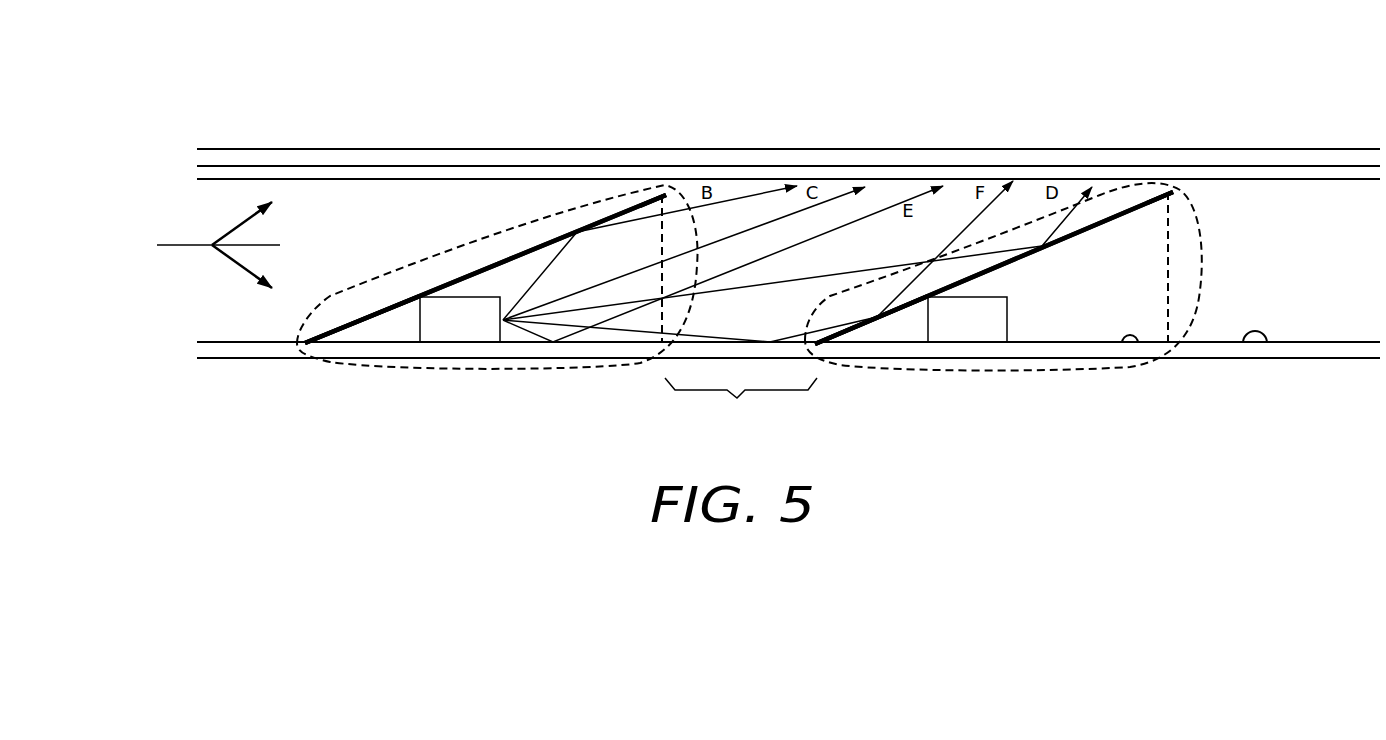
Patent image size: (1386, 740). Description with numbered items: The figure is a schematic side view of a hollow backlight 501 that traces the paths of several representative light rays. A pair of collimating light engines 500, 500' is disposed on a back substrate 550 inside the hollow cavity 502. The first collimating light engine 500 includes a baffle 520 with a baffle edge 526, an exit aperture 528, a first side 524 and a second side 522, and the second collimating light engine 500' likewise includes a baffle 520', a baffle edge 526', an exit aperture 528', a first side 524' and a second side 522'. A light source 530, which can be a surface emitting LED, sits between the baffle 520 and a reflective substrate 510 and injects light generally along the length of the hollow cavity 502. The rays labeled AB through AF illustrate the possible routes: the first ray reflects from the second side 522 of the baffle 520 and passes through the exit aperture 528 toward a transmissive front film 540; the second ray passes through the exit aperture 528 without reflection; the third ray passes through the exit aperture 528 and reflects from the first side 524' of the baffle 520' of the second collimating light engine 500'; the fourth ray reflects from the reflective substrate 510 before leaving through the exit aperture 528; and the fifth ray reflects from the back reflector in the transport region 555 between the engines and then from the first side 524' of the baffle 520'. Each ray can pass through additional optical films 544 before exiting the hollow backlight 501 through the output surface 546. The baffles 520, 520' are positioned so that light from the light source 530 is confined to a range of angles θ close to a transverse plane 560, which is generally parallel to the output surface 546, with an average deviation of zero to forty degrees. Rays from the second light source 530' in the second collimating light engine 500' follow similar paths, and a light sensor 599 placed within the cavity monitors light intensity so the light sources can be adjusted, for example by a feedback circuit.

The hollow backlight 501 is at (187, 80).
The hollow cavity 502 is at (325, 200).
The transmissive front film 540 is at (258, 157).
The additional optical films 544 is at (387, 172).
The output surface 546 is at (446, 148).
The back substrate 550 is at (233, 348).
The transverse plane 560 is at (182, 245).
The first collimating light engine 500 is at (497, 310).
The baffle 520 is at (485, 214).
The first side 524 is at (485, 214).
The baffle edge 526 is at (680, 149).
The exit aperture 528 is at (725, 218).
The second side 522 is at (362, 360).
The light source 530 is at (460, 360).
The transport region 555 is at (741, 406).
The second collimating light engine 500' is at (1003, 308).
The baffle 520' is at (999, 201).
The first side 524' is at (994, 201).
The baffle edge 526' is at (1194, 143).
The exit aperture 528' is at (1223, 267).
The second side 522' is at (871, 360).
The second light source 530' is at (967, 360).
The reflective substrate 510 is at (1136, 345).
The light sensor 599 is at (1255, 343).